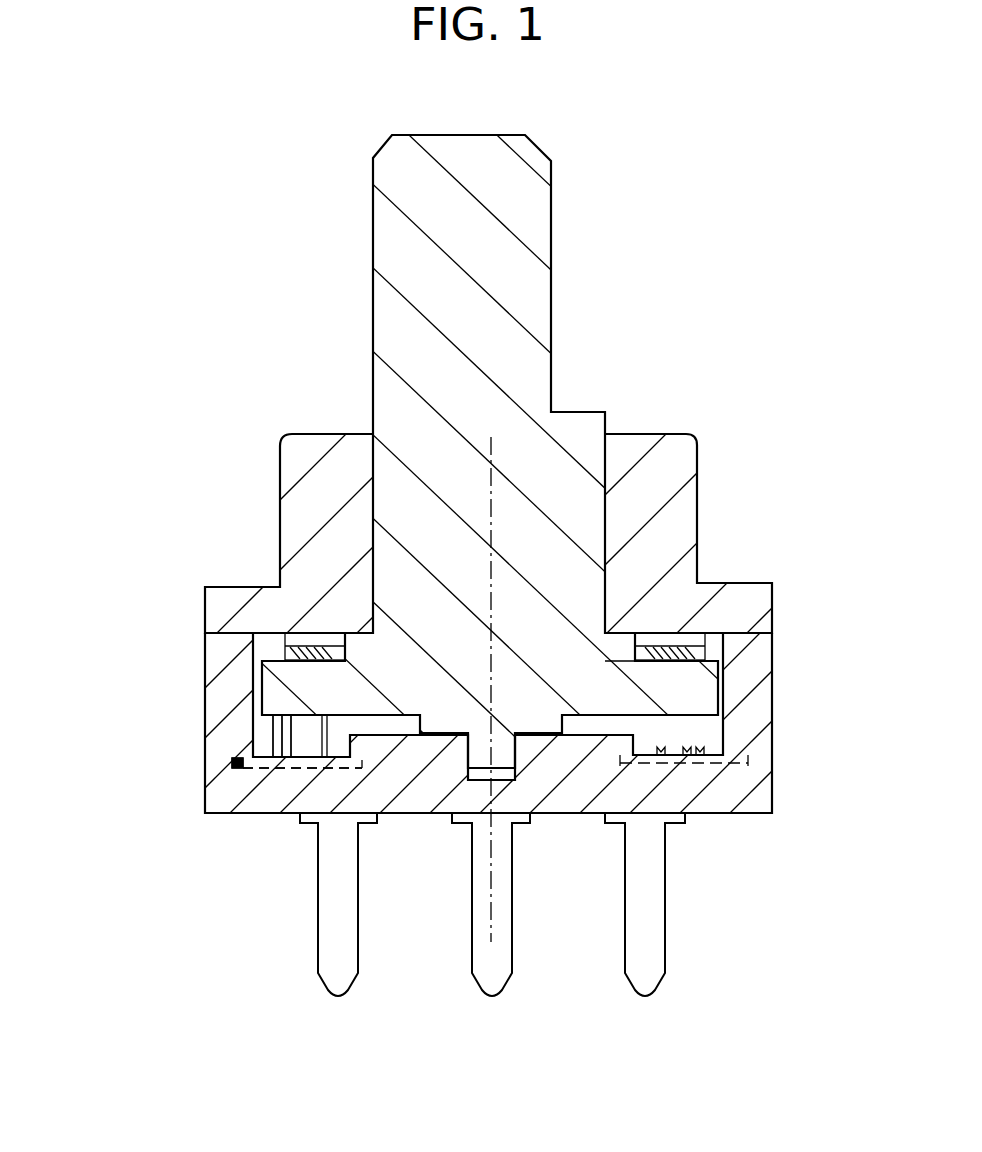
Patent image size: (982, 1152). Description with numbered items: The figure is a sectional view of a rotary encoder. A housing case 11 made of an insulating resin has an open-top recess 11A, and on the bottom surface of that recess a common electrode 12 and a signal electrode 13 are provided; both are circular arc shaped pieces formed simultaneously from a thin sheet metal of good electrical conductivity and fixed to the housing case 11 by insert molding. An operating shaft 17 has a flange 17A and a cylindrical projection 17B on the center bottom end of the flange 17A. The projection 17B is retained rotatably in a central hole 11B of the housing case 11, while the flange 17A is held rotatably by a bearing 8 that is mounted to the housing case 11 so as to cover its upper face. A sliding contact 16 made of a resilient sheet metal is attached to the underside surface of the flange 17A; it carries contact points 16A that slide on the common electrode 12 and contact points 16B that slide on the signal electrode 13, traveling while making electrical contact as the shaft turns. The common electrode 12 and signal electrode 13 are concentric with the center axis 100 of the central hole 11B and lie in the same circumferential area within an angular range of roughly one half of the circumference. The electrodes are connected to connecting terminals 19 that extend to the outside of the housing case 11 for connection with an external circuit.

The bearing 8 is at (698, 450).
The housing case 11 is at (762, 687).
The open-top recess 11A is at (754, 622).
The central hole 11B is at (470, 778).
The common electrode 12 is at (668, 758).
The signal electrode 13 is at (728, 766).
The sliding contact 16 is at (96, 647).
The contact points 16A is at (250, 753).
The contact points 16B is at (277, 742).
The operating shaft 17 is at (538, 297).
The flange 17A is at (677, 672).
The cylindrical projection 17B is at (477, 750).
The connecting terminals 19 is at (352, 985).
The center axis 100 is at (511, 910).